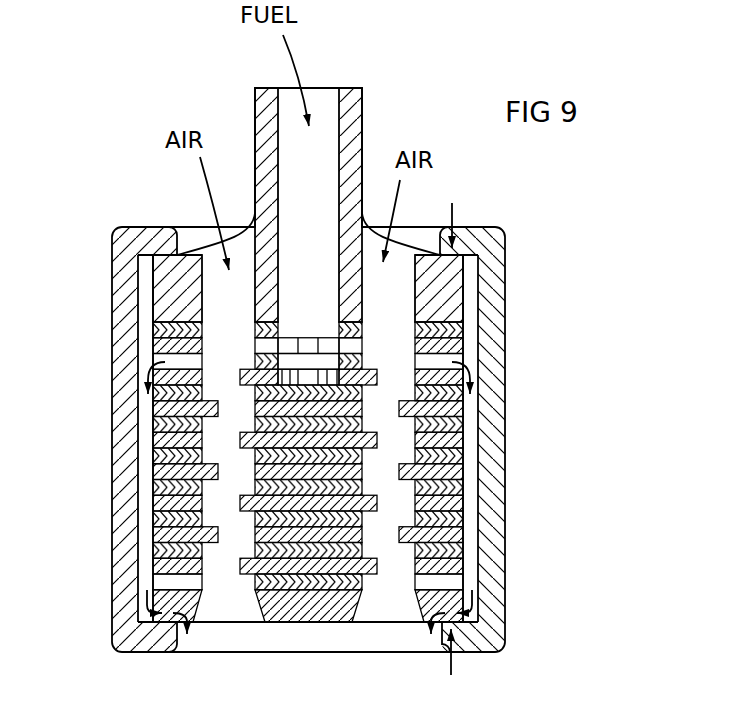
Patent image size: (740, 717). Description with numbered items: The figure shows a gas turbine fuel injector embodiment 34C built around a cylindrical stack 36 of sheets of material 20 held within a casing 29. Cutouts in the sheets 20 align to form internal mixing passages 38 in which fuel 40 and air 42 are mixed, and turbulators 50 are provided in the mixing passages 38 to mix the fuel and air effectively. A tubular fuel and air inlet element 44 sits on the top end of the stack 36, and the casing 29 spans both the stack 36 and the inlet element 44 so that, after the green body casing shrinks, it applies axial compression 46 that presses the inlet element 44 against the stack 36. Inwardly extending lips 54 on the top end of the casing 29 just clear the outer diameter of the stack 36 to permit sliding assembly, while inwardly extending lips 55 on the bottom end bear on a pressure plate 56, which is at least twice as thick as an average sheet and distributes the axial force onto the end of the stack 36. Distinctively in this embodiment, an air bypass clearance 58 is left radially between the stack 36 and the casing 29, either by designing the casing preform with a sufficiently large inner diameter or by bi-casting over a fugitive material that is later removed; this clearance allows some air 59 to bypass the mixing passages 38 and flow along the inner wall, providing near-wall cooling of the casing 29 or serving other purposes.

The fuel injector embodiment 34C is at (105, 112).
The fuel 40 is at (300, 75).
The fuel and air inlet element 44 is at (352, 126).
The air 42 is at (214, 188).
The inwardly extending lips 54 is at (160, 240).
The axial compression 46 is at (452, 215).
The air bypass clearance 58 is at (470, 337).
The bypass air 59 is at (470, 372).
The stack 36 is at (172, 407).
The mixing passages 38 is at (222, 489).
The sheets of material 20 is at (170, 557).
The casing 29 is at (123, 580).
The pressure plate 56 is at (150, 610).
The inwardly extending lips 55 is at (163, 640).
The turbulators 50 is at (248, 568).